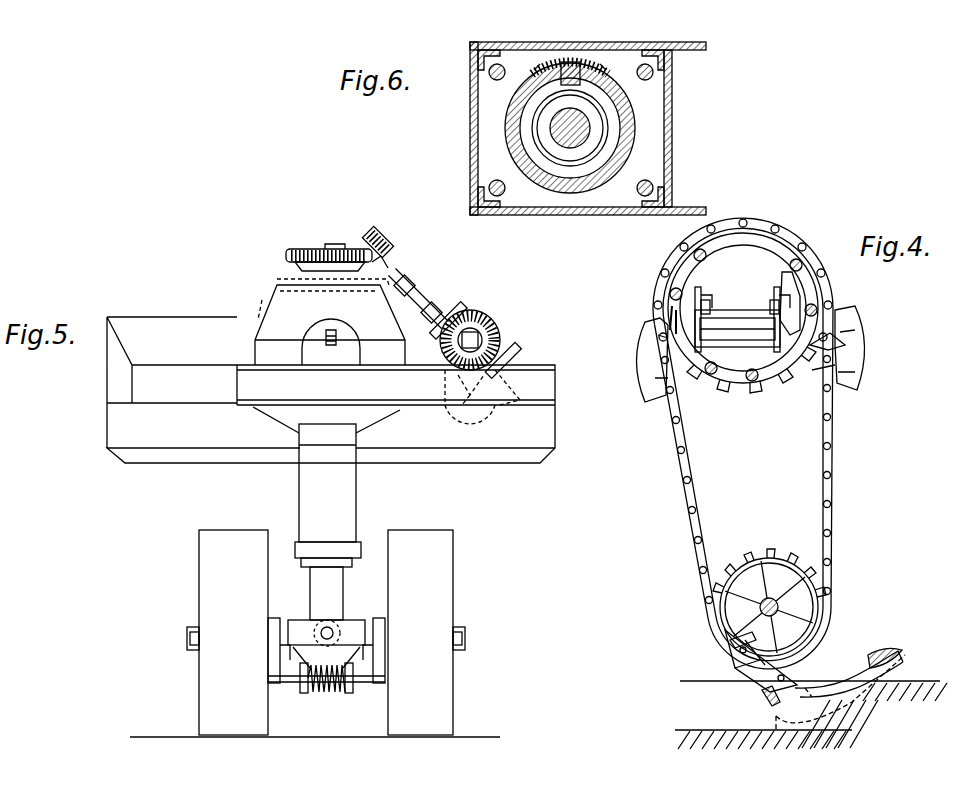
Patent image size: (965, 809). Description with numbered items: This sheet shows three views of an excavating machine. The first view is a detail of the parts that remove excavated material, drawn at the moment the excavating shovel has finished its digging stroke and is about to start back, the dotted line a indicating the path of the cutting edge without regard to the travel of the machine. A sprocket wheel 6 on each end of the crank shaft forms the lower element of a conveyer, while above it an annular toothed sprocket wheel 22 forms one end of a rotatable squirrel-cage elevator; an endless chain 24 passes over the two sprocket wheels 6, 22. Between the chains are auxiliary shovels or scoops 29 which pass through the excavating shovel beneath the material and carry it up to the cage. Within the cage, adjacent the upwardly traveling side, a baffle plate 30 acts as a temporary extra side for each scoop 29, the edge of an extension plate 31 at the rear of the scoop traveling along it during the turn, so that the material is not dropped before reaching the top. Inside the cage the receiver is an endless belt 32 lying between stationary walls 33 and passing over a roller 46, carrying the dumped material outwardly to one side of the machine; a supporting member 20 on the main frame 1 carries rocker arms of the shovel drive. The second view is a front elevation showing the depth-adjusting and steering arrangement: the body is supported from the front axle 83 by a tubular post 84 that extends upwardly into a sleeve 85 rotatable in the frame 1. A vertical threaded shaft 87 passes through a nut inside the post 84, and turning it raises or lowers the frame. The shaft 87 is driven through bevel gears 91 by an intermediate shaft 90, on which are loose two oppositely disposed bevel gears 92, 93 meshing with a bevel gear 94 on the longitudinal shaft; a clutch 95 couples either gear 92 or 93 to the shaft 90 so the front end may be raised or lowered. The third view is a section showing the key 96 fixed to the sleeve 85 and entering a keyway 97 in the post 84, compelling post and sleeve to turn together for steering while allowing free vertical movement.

In FIG. 6, the main frame 1 is at (582, 215).
In FIG. 5, the main frame 1 is at (540, 418).
In FIG. 4, the sprocket wheel 6 is at (780, 565).
In FIG. 4, the supporting member 20 is at (822, 684).
In FIG. 4, the sprocket wheel 22 is at (752, 250).
In FIG. 4, the endless chain 24 is at (690, 468).
In FIG. 4, the auxiliary shovel 29 is at (640, 346).
In FIG. 4, the baffle plate 30 is at (795, 282).
In FIG. 4, the extension plate 31 is at (673, 327).
In FIG. 4, the endless belt 32 is at (740, 312).
In FIG. 4, the stationary wall 33 is at (703, 296).
In FIG. 4, the roller 46 is at (752, 338).
In FIG. 5, the front axle 83 is at (352, 623).
In FIG. 6, the post 84 is at (608, 110).
In FIG. 5, the post 84 is at (344, 586).
In FIG. 6, the sleeve 85 is at (622, 146).
In FIG. 6, the threaded shaft 87 is at (560, 143).
In FIG. 5, the threaded shaft 87 is at (338, 326).
In FIG. 5, the intermediate shaft 90 is at (425, 300).
In FIG. 5, the bevel gears 91 is at (368, 248).
In FIG. 5, the bevel gear 92 is at (468, 306).
In FIG. 5, the bevel gear 93 is at (508, 349).
In FIG. 5, the bevel gear 94 is at (488, 324).
In FIG. 5, the clutch 95 is at (442, 376).
In FIG. 6, the key 96 is at (570, 78).
In FIG. 6, the keyway 97 is at (545, 118).
In FIG. 4, the dotted line a is at (892, 650).